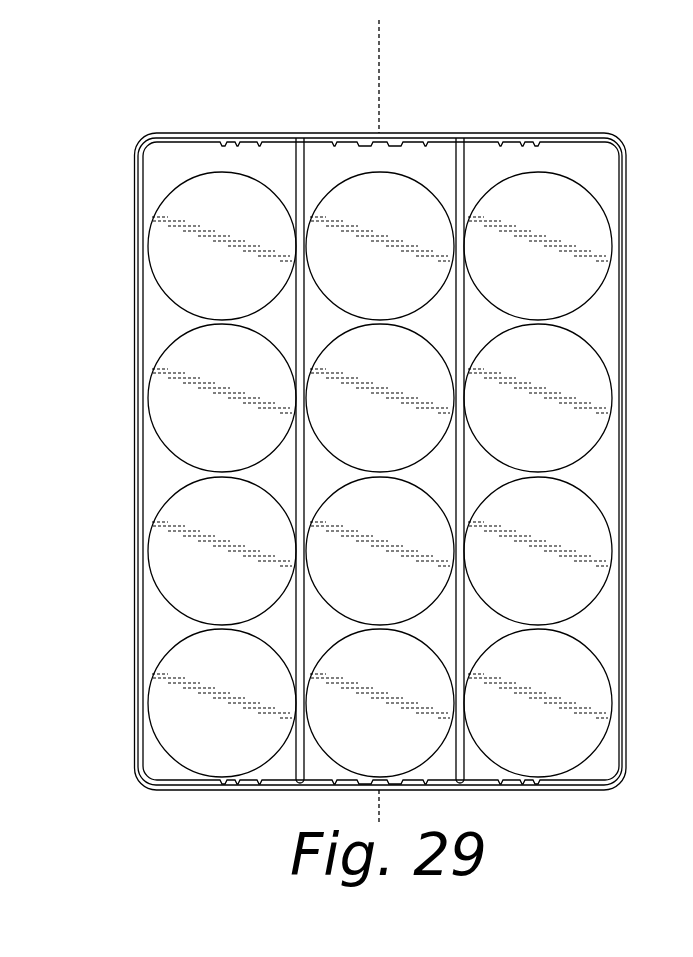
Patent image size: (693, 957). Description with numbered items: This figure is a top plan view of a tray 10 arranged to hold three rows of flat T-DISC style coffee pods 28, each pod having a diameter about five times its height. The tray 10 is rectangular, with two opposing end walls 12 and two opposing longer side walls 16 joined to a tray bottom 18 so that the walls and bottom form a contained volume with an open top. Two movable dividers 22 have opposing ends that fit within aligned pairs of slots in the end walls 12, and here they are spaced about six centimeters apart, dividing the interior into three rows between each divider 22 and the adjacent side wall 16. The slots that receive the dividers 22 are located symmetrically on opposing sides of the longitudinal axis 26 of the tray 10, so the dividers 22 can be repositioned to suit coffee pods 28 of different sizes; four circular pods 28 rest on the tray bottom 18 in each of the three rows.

The tray 10 is at (320, 84).
The end wall 12 is at (571, 132).
The side wall 16 is at (134, 305).
The tray bottom 18 is at (155, 475).
The divider 22 is at (299, 150).
The longitudinal axis 26 is at (382, 48).
The coffee pod 28 is at (155, 554).